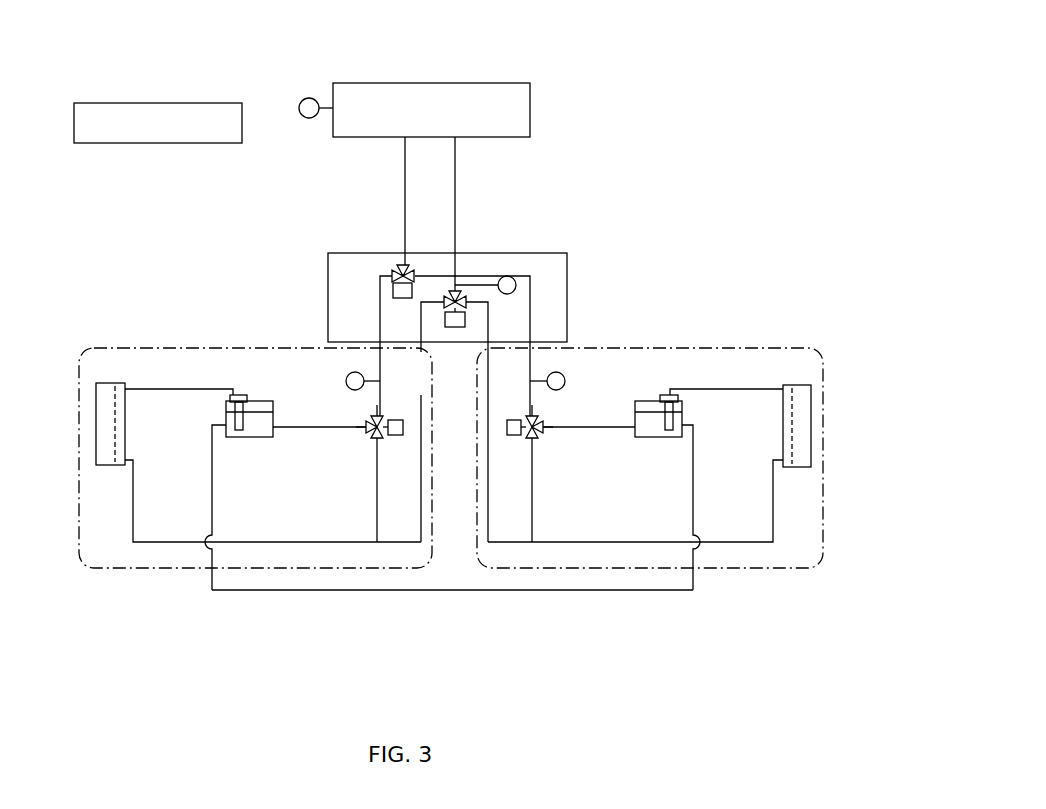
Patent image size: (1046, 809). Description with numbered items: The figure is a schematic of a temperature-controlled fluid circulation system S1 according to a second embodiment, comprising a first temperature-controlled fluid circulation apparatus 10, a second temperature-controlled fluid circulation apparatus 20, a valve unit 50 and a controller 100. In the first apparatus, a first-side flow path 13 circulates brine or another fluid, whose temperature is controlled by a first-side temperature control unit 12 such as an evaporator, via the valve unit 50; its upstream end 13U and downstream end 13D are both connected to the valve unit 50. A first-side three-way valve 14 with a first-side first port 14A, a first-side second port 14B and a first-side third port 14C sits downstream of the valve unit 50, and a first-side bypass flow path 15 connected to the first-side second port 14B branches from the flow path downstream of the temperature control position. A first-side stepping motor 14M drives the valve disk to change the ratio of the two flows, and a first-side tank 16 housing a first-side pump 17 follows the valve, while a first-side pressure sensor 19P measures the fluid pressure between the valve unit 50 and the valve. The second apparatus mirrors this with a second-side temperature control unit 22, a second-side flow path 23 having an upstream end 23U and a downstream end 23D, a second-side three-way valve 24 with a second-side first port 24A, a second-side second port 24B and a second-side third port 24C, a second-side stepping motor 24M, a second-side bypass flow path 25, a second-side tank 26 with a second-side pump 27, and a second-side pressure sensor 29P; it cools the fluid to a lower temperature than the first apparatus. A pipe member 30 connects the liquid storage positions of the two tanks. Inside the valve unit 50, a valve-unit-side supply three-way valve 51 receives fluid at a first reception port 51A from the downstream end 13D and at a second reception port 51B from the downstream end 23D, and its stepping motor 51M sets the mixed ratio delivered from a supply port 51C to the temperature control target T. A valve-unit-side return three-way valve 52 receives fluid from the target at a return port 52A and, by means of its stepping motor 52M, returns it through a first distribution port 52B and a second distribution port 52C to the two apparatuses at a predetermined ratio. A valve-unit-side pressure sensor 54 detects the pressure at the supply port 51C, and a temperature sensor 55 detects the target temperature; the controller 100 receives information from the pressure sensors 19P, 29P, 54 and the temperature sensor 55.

The controller 100 is at (176, 103).
The temperature sensor 55 is at (308, 98).
The temperature control target T is at (458, 83).
The temperature-controlled fluid circulation system S1 is at (788, 139).
The valve unit 50 is at (572, 258).
The valve-unit-side return three-way valve 52 is at (383, 292).
The return port 52A is at (400, 265).
The first distribution port 52B is at (391, 270).
The second distribution port 52C is at (416, 271).
The stepping motor 52M is at (396, 300).
The valve-unit-side supply three-way valve 51 is at (446, 326).
The first reception port 51A is at (441, 303).
The second reception port 51B is at (535, 302).
The supply port 51C is at (458, 272).
The stepping motor 51M is at (466, 322).
The valve-unit-side pressure sensor 54 is at (508, 276).
The first temperature-controlled fluid circulation apparatus 10 is at (186, 344).
The second temperature-controlled fluid circulation apparatus 20 is at (761, 342).
The first-side temperature control unit 12 is at (95, 420).
The first-side flow path 13 is at (167, 550).
The upstream end 13U is at (376, 351).
The downstream end 13D is at (419, 351).
The first-side three-way valve 14 is at (385, 447).
The first-side first port 14A is at (370, 419).
The first-side second port 14B is at (372, 438).
The first-side third port 14C is at (365, 429).
The first-side stepping motor 14M is at (404, 420).
The first-side bypass flow path 15 is at (375, 527).
The first-side tank 16 is at (233, 437).
The first-side pump 17 is at (228, 403).
The first-side pressure sensor 19P is at (345, 381).
The second-side temperature control unit 22 is at (812, 437).
The second-side flow path 23 is at (746, 550).
The upstream end 23U is at (545, 347).
The downstream end 23D is at (480, 350).
The second-side three-way valve 24 is at (524, 447).
The second-side first port 24A is at (540, 419).
The second-side second port 24B is at (536, 438).
The second-side third port 24C is at (545, 429).
The second-side stepping motor 24M is at (514, 420).
The second-side bypass flow path 25 is at (536, 527).
The second-side tank 26 is at (660, 437).
The second-side pump 27 is at (679, 405).
The second-side pressure sensor 29P is at (567, 381).
The pipe member 30 is at (450, 592).